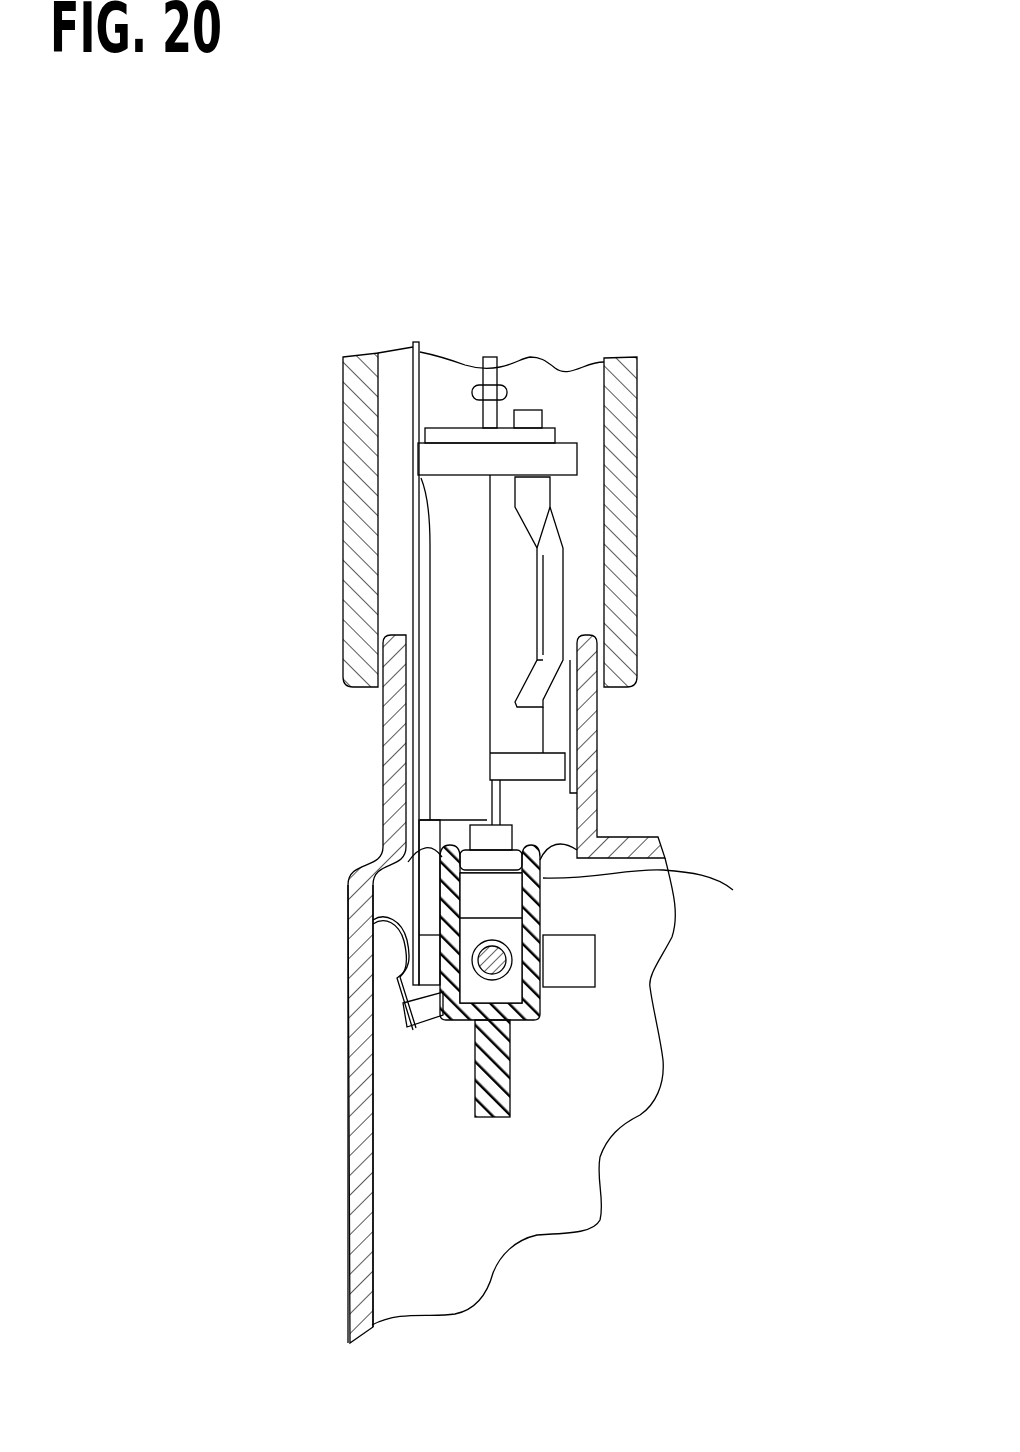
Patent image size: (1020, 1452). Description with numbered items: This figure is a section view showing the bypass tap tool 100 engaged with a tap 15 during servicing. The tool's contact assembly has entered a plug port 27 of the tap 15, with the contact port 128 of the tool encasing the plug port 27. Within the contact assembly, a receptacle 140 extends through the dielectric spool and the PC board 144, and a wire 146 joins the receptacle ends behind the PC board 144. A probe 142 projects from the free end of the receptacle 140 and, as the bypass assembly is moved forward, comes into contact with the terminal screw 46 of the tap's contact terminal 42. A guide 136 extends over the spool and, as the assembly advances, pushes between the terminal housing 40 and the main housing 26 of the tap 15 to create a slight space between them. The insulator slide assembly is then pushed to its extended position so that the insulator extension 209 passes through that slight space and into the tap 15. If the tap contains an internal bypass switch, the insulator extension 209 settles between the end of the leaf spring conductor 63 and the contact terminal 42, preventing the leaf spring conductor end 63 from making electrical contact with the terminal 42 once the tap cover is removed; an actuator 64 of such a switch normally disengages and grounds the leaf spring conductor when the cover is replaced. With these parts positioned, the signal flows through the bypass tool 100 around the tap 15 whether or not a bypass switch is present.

The tap 15 is at (687, 1070).
The main housing 26 is at (350, 1128).
The plug port 27 is at (383, 750).
The terminal housing 40 is at (542, 1052).
The contact terminal 42 is at (512, 935).
The terminal screw 46 is at (658, 894).
The leaf spring conductor end 63 is at (380, 935).
The actuator 64 is at (423, 1015).
The bypass tap tool 100 is at (662, 522).
The contact port 128 is at (572, 600).
The guide 136 is at (457, 593).
The receptacle 140 is at (490, 355).
The probe 142 is at (513, 833).
The PC board 144 is at (557, 437).
The wire 146 is at (507, 390).
The insulator extension 209 is at (413, 342).